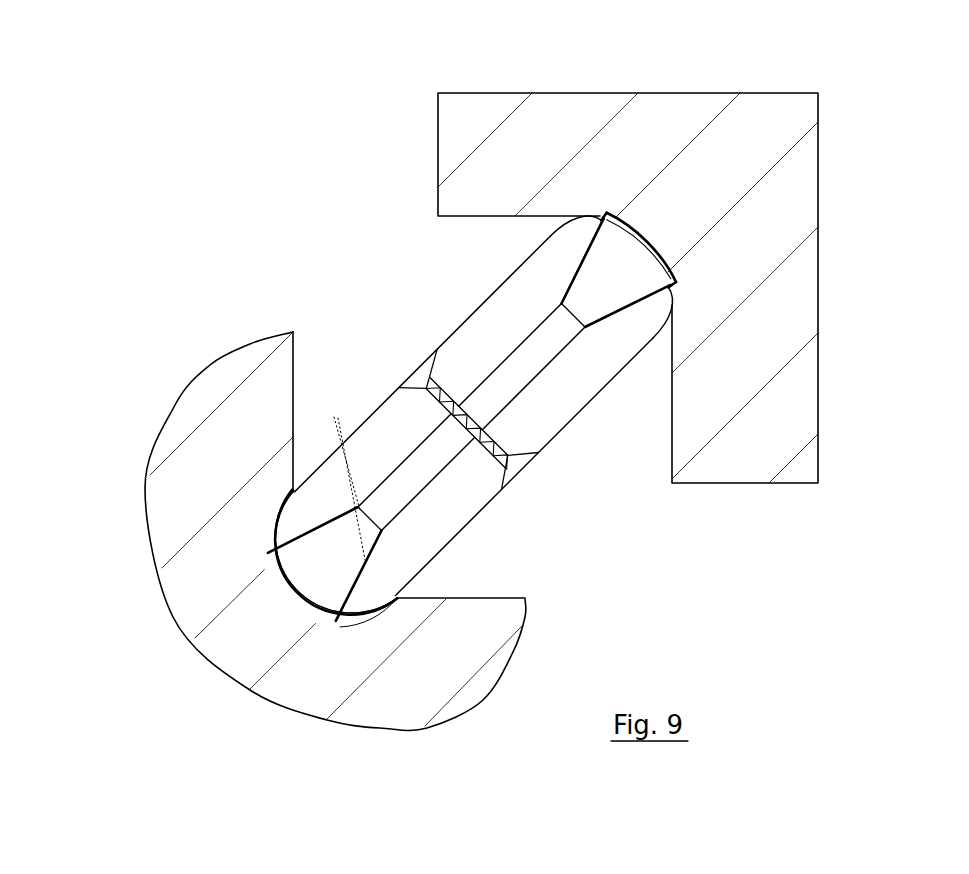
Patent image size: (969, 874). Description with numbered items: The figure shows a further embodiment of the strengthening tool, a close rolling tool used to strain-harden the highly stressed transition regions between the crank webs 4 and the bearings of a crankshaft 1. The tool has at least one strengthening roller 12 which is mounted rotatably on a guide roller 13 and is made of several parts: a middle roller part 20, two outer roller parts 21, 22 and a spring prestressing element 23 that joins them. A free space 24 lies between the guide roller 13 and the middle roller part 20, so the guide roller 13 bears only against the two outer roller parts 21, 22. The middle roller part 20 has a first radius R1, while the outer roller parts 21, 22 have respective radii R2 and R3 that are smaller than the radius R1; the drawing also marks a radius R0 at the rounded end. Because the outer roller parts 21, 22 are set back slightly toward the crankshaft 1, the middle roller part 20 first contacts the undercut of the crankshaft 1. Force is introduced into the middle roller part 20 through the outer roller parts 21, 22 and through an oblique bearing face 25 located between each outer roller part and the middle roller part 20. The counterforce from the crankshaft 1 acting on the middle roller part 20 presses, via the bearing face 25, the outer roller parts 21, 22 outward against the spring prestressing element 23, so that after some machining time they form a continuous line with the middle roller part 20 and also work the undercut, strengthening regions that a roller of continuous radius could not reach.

The crankshaft 1 is at (158, 520).
The crank web 4 is at (278, 383).
The strengthening roller 12 is at (510, 315).
The guide roller 13 is at (444, 137).
The middle roller part 20 is at (272, 569).
The outer roller part 21 is at (465, 355).
The outer roller part 22 is at (560, 412).
The spring prestressing element 23 is at (507, 458).
The free space 24 is at (640, 243).
The bearing face 25 is at (336, 472).
The radius R0 is at (292, 607).
The first radius R1 is at (330, 565).
The radius R2 is at (277, 523).
The radius R3 is at (365, 613).